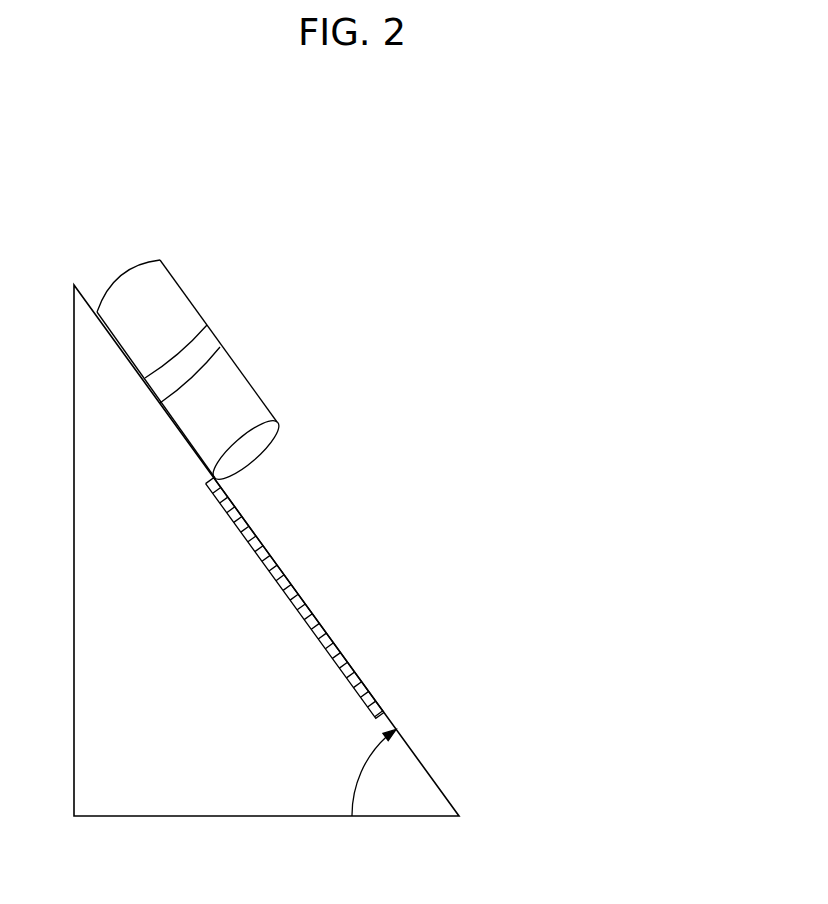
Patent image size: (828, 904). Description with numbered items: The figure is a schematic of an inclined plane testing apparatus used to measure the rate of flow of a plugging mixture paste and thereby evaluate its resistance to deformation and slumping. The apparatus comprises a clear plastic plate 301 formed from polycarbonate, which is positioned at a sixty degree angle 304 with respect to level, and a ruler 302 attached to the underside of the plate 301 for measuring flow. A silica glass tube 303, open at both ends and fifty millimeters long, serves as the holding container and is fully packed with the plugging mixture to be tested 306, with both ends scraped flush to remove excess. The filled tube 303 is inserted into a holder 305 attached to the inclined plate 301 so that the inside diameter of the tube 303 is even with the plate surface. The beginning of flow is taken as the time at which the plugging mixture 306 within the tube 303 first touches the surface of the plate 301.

The clear plastic plate 301 is at (276, 548).
The ruler 302 is at (324, 630).
The silica glass tube 303 is at (261, 370).
The 60 degree angle 304 is at (426, 778).
The holder 305 is at (229, 333).
The plugging mixture to be tested 306 is at (257, 453).